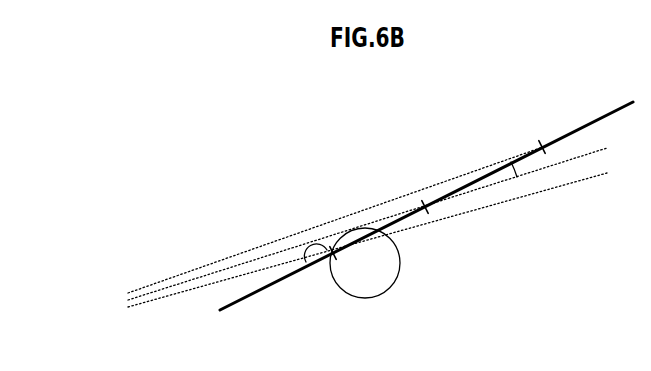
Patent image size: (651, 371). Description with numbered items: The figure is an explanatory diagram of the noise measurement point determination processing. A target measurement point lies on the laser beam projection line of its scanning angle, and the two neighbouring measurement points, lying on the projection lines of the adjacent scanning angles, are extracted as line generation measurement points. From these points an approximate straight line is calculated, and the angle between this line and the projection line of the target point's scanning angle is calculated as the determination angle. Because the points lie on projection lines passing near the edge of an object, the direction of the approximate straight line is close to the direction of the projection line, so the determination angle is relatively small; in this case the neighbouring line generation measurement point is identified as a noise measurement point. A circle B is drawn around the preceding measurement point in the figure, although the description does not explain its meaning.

The circle of radius around sampling point B is at (396, 284).